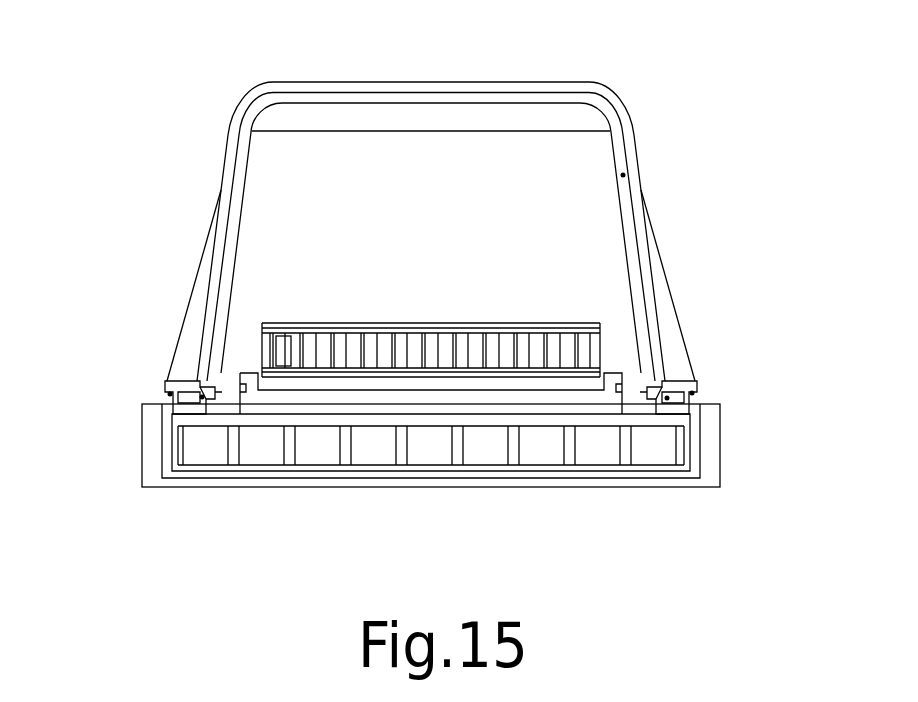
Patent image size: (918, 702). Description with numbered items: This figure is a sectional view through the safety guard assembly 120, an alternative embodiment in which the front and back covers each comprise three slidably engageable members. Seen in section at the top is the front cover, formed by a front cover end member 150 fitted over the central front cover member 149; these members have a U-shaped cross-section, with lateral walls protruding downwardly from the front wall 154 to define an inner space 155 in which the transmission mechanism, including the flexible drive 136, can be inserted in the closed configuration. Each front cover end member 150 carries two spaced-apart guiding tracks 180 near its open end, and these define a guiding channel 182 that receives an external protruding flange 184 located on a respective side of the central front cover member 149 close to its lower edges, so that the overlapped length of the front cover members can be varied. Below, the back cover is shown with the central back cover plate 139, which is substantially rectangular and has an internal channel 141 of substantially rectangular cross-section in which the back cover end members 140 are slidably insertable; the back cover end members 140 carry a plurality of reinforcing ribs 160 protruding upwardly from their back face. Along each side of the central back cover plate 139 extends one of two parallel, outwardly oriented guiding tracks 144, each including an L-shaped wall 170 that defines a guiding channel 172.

The safety guard assembly 120 is at (724, 61).
The front cover end member 150 is at (478, 193).
The front wall 154 is at (433, 81).
The central front cover member 149 is at (623, 175).
The inner space 155 is at (559, 214).
The flexible drive 136 is at (586, 324).
The central back cover plate 139 is at (417, 332).
The L-shaped wall 170 is at (240, 375).
The guiding track 180 is at (417, 412).
The guiding track 144 is at (231, 393).
The guiding channel 172 is at (222, 398).
The guiding channel 182 is at (166, 404).
The external protruding flange 184 is at (202, 397).
The back cover end member 140 is at (431, 478).
The internal channel 141 is at (431, 483).
The reinforcing ribs 160 is at (342, 447).